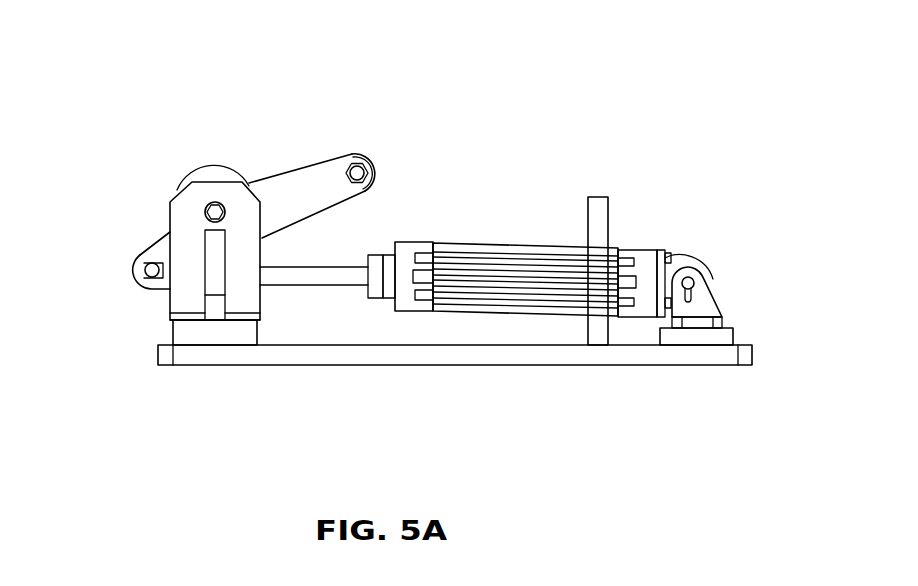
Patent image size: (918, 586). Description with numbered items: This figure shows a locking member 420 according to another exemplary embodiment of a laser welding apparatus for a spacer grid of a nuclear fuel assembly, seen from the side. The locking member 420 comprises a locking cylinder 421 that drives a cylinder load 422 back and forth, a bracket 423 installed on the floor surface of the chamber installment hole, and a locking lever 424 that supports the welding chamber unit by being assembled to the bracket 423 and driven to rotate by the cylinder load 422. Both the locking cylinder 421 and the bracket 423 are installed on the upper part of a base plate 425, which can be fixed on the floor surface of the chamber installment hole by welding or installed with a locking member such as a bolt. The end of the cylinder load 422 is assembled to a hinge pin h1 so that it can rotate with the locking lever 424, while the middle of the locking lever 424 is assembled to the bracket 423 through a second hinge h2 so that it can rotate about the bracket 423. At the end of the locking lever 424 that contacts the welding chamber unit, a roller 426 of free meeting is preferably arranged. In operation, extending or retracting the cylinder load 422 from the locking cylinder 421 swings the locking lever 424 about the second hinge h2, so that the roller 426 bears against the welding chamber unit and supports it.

The locking member 420 is at (503, 128).
The locking cylinder 421 is at (527, 253).
The cylinder load 422 is at (329, 282).
The bracket 423 is at (220, 187).
The locking lever 424 is at (298, 177).
The base plate 425 is at (568, 355).
The roller 426 is at (372, 153).
The hinge pin h1 is at (146, 270).
The second hinge h2 is at (206, 212).